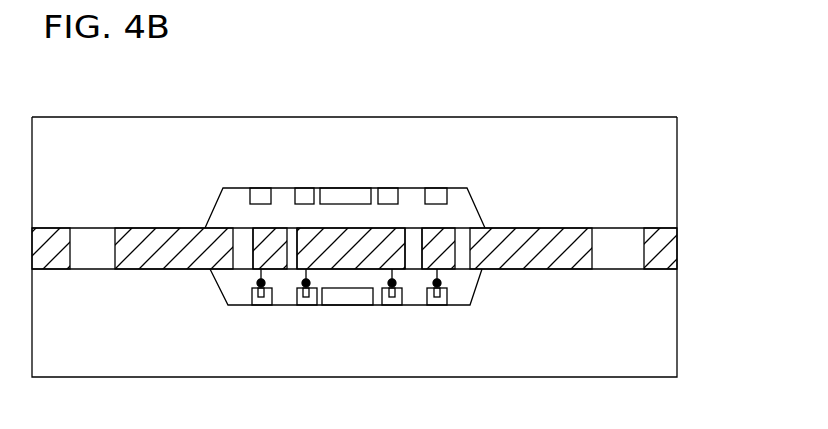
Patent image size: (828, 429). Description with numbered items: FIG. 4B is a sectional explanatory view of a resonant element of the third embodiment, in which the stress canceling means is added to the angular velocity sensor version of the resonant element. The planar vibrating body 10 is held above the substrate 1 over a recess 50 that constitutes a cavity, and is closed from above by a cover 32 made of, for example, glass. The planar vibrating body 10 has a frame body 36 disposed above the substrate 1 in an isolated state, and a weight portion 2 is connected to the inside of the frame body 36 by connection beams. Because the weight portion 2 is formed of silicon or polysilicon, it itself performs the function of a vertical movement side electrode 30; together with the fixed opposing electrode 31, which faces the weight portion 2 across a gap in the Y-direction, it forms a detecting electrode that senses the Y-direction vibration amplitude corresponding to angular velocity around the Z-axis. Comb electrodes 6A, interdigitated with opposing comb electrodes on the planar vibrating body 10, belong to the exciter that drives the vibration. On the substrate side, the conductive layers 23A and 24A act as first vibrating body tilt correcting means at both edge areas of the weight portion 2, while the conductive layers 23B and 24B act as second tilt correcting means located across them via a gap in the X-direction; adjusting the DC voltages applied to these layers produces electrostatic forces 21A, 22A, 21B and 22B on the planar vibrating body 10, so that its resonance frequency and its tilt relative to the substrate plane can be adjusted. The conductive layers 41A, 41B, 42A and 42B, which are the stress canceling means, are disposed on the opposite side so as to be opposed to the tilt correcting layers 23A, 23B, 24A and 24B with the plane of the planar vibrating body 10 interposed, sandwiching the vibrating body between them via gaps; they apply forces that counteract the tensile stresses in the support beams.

The substrate 1 is at (665, 312).
The cover 32 is at (663, 183).
The planar vibrating body 10 is at (319, 228).
The comb electrodes 6A is at (210, 229).
The weight portion 2 is at (363, 237).
The frame body 36 is at (255, 230).
The vertical movement side electrode 30 is at (412, 189).
The recess 50 is at (216, 282).
The fixed opposing electrode 31 is at (363, 188).
The conductive layer 41A is at (303, 190).
The conductive layer 41B is at (258, 190).
The conductive layer 42A is at (395, 190).
The conductive layer 42B is at (448, 198).
The electrostatic force 21A is at (303, 282).
The electrostatic force 21B is at (258, 271).
The electrostatic force 22A is at (394, 275).
The electrostatic force 22B is at (505, 302).
The conductive layer 23A is at (305, 305).
The conductive layer 23B is at (260, 293).
The conductive layer 24A is at (388, 305).
The conductive layer 24B is at (443, 307).